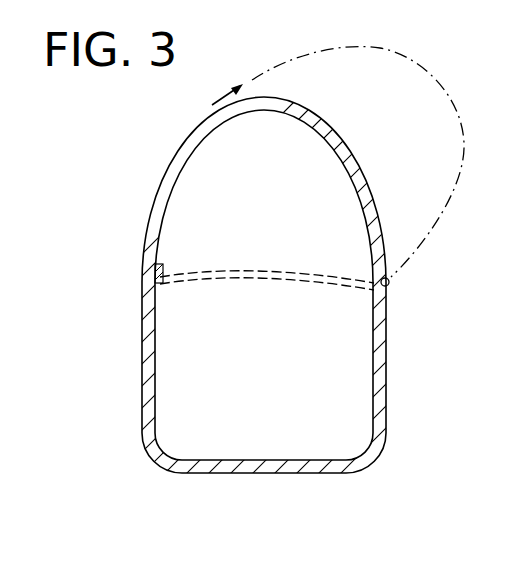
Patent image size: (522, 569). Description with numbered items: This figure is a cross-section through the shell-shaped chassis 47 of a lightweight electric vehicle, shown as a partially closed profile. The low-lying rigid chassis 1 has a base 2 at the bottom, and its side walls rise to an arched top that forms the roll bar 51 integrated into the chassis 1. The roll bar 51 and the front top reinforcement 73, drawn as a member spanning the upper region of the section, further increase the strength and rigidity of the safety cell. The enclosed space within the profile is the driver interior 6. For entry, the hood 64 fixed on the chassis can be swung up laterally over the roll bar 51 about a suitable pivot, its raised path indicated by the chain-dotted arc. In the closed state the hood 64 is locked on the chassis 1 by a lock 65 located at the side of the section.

The chassis 1 is at (142, 328).
The base 2 is at (233, 472).
The driver interior 6 is at (262, 382).
The shell-shaped chassis 47 is at (161, 461).
The roll bar 51 is at (175, 157).
The hood 64 is at (323, 50).
The lock 65 is at (164, 278).
The front top reinforcement 73 is at (281, 271).